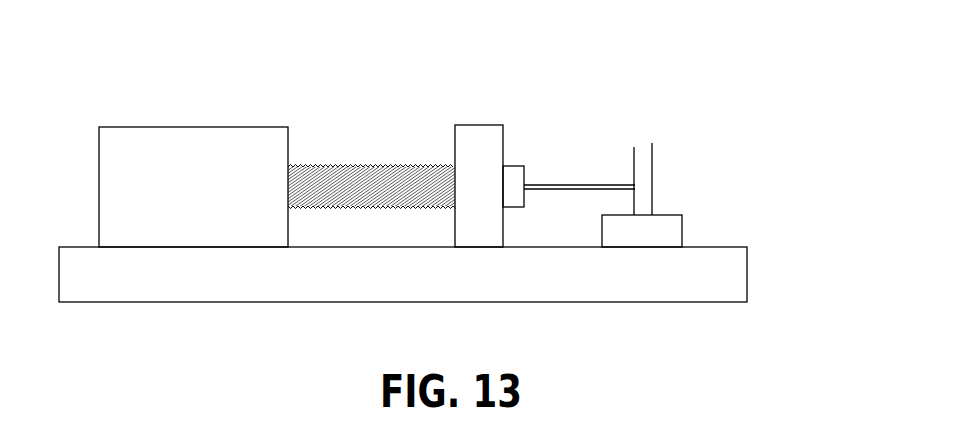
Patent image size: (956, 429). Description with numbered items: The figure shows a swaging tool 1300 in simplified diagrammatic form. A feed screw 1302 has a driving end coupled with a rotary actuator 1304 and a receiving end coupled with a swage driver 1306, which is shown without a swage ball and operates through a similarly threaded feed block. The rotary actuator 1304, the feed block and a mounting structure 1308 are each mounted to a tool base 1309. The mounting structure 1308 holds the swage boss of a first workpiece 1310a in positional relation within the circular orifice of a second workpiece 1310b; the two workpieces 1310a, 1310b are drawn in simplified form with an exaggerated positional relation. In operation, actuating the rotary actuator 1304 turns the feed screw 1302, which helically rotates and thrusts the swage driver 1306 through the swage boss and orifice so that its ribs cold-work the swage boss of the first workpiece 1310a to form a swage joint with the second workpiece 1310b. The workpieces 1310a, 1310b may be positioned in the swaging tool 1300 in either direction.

The swaging tool 1300 is at (606, 98).
The feed screw 1302 is at (355, 167).
The rotary actuator 1304 is at (156, 127).
The swage driver 1306 is at (575, 190).
The mounting structure 1308 is at (684, 230).
The tool base 1309 is at (748, 276).
The first workpiece 1310a is at (632, 170).
The second workpiece 1310b is at (655, 170).